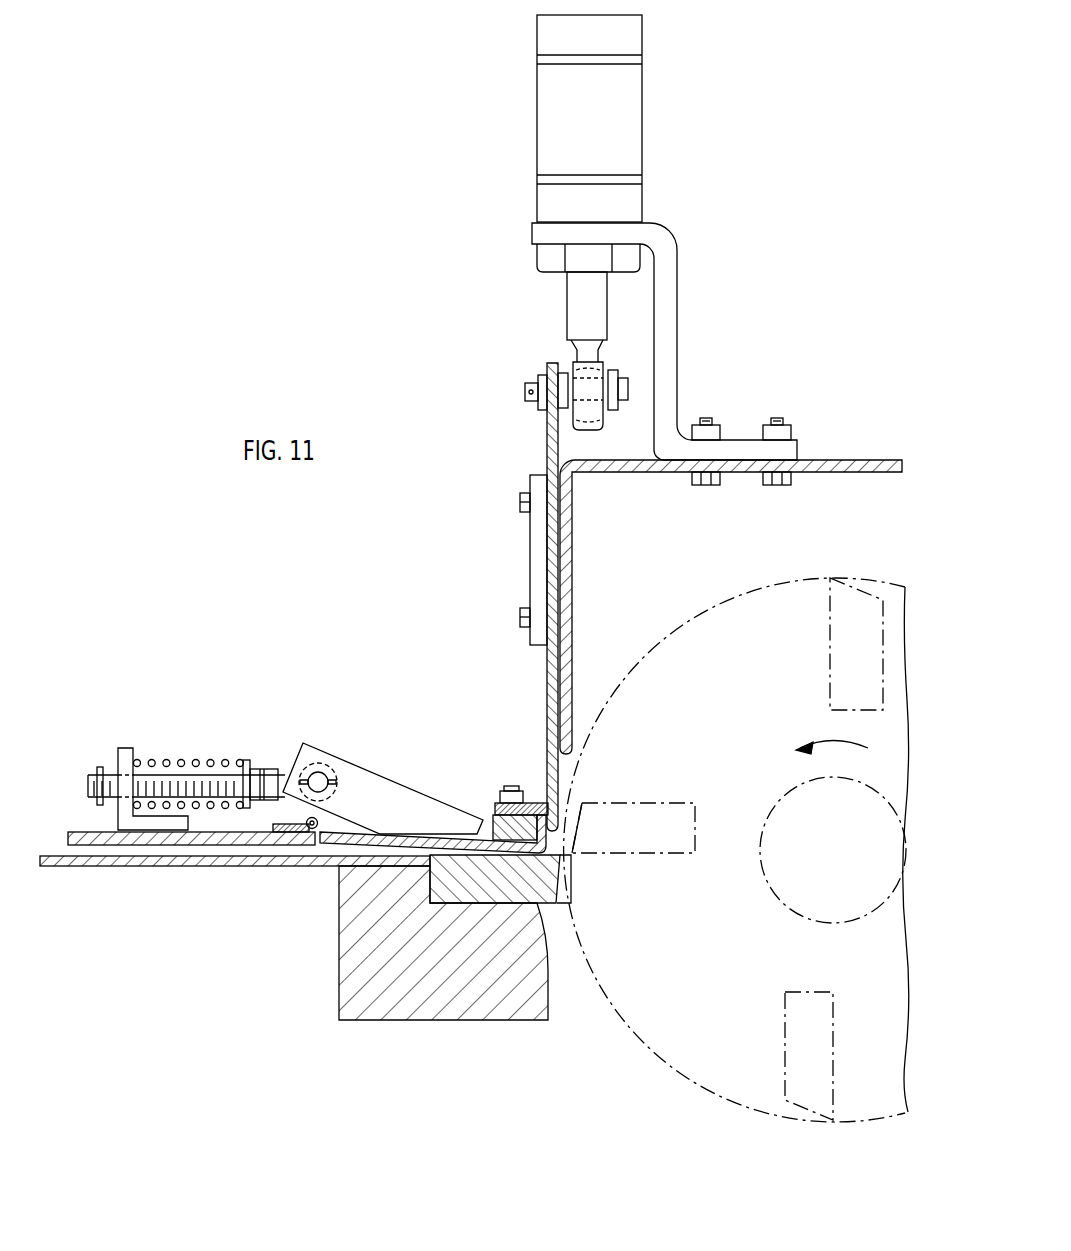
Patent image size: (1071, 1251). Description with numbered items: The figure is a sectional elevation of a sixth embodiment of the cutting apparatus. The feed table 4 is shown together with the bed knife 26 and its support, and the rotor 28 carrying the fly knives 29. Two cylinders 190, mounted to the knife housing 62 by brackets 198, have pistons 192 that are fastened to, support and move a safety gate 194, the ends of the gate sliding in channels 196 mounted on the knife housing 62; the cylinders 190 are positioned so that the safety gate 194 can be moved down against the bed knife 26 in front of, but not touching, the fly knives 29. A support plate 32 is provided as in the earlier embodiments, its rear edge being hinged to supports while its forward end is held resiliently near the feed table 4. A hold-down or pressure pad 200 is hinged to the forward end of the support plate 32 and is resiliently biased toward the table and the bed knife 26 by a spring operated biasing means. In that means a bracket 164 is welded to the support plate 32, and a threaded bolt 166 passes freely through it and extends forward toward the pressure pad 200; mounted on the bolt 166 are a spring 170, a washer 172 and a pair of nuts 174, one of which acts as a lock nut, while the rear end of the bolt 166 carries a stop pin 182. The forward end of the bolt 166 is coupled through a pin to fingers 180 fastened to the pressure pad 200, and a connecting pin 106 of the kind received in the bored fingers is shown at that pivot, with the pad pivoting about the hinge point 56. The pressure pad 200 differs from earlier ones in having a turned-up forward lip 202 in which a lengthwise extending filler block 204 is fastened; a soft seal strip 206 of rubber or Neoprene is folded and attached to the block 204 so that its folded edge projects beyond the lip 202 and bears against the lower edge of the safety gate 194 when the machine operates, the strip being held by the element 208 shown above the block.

The feed table 4 is at (160, 863).
The bed knife 26 is at (514, 889).
The rotor 28 is at (710, 608).
The fly knives 29 is at (828, 662).
The support plate 32 is at (80, 834).
The pivot 56 is at (305, 820).
The knife housing 62 is at (875, 466).
The connecting pin 106 is at (320, 782).
The brackets 164 is at (125, 748).
The threaded bolt 166 is at (88, 784).
The spring 170 is at (163, 760).
The washer 172 is at (243, 762).
The nuts 174 is at (270, 770).
The fingers 180 is at (358, 766).
The stop pin 182 is at (99, 766).
The cylinders 190 is at (642, 123).
The pistons 192 is at (567, 312).
The safety gate 194 is at (548, 705).
The channels 196 is at (535, 570).
The brackets 198 is at (667, 333).
The pressure pad 200 is at (446, 836).
The lip 202 is at (553, 836).
The filler block 204 is at (492, 826).
The soft seal strip 206 is at (536, 800).
The pad 208 is at (555, 808).